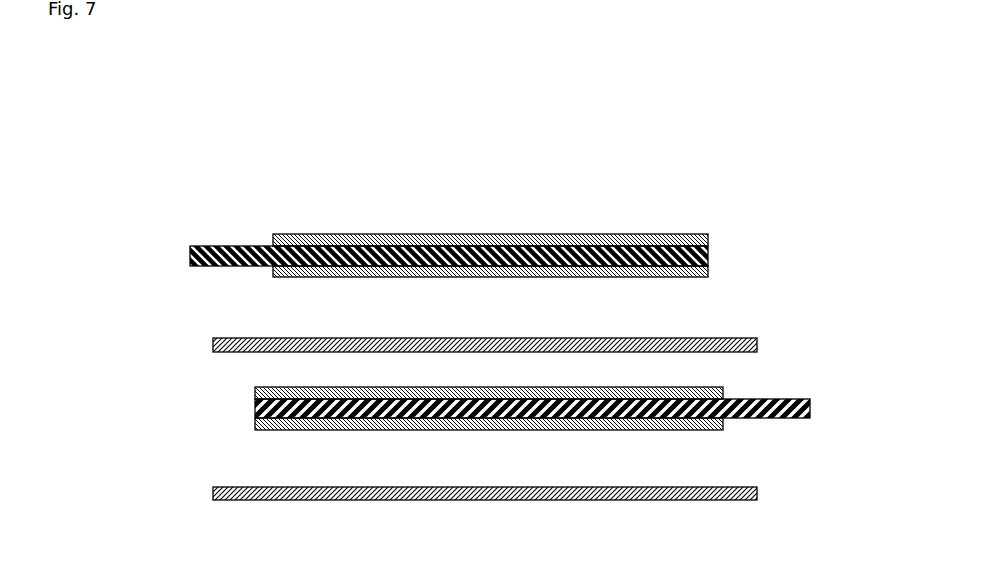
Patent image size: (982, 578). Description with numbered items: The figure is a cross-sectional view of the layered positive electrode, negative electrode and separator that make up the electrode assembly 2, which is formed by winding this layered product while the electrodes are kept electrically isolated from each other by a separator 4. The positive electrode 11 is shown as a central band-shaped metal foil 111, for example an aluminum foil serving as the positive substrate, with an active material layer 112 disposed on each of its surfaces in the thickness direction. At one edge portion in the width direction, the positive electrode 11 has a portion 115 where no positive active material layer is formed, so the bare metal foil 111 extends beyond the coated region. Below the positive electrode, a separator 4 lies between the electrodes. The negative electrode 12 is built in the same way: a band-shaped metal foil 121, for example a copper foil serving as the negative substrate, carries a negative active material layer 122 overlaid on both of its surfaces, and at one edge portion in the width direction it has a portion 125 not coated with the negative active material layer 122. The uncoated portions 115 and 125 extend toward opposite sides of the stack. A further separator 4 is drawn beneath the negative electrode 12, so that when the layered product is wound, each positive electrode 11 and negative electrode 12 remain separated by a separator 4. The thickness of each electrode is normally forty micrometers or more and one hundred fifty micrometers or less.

The electrode assembly 2 is at (118, 98).
The separator 4 is at (213, 342).
The positive electrode 11 is at (824, 207).
The metal foil 111 is at (708, 257).
The active material layer 112 is at (708, 234).
The portion not coated with the positive active material layer 115 is at (208, 238).
The negative electrode 12 is at (130, 378).
The metal foil 121 is at (255, 410).
The negative active material layer 122 is at (255, 387).
The portion not coated with the negative active material layer 125 is at (768, 424).